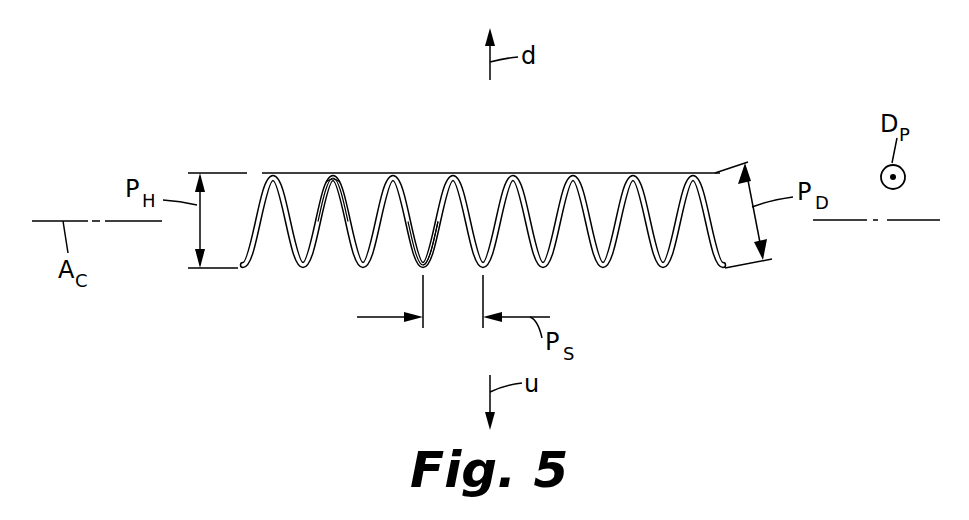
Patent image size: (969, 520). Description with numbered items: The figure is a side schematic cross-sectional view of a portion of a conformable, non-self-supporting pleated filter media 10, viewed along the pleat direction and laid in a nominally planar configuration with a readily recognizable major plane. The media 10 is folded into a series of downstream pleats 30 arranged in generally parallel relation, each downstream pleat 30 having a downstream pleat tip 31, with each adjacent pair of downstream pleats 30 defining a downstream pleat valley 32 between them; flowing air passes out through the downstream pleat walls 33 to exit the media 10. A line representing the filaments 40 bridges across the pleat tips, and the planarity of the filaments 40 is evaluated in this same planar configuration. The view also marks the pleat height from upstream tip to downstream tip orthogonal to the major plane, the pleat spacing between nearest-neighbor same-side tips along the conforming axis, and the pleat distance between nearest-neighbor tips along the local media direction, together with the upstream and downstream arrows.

The pleated filter media 10 is at (196, 76).
The downstream pleat 30 is at (325, 187).
The downstream pleat tip 31 is at (330, 183).
The downstream pleat valley 32 is at (420, 187).
The downstream pleat wall 33 is at (432, 200).
The filament 40 is at (605, 172).